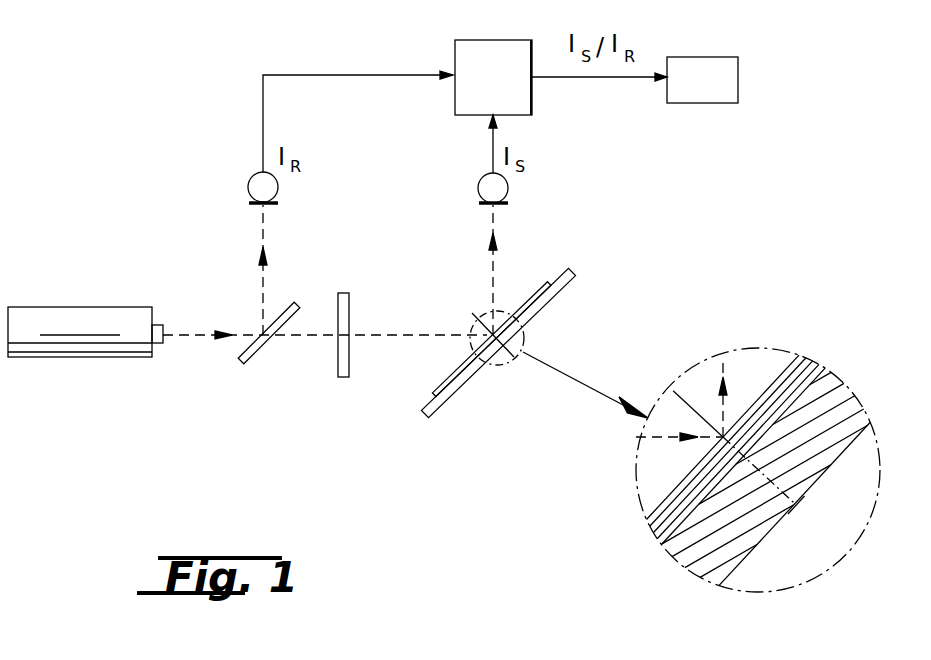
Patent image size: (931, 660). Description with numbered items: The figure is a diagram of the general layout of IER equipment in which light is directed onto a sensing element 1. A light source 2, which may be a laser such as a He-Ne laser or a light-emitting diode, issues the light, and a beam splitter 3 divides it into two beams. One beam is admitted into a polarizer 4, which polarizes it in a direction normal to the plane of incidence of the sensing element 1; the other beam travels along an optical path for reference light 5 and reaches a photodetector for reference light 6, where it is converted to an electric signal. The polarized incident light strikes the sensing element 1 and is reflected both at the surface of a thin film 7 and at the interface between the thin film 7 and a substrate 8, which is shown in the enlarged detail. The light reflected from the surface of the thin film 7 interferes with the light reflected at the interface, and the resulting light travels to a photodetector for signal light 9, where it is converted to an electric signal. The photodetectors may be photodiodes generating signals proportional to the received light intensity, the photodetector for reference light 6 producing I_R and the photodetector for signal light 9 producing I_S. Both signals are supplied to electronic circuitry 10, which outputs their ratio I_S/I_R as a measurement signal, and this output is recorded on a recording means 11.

The sensing element 1 is at (415, 422).
The light source 2 is at (65, 348).
The beam splitter 3 is at (258, 352).
The polarizer 4 is at (349, 358).
The optical path for reference light 5 is at (262, 290).
The photodetector for reference light 6 is at (248, 184).
The thin film 7 is at (807, 362).
The substrate 8 is at (847, 398).
The photodetector for signal light 9 is at (478, 186).
The electronic circuitry 10 is at (462, 58).
The recording means 11 is at (724, 62).